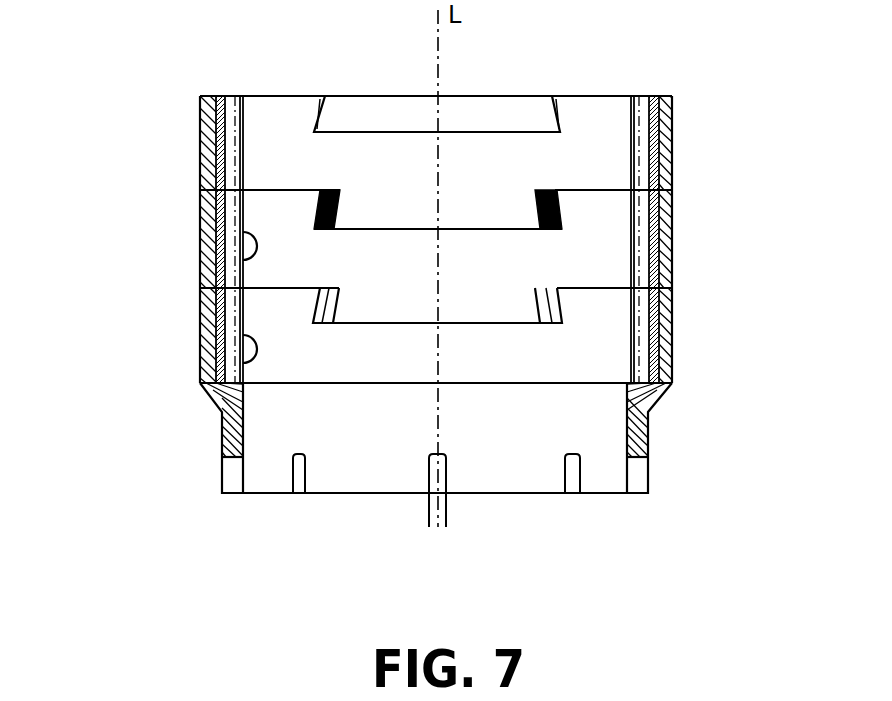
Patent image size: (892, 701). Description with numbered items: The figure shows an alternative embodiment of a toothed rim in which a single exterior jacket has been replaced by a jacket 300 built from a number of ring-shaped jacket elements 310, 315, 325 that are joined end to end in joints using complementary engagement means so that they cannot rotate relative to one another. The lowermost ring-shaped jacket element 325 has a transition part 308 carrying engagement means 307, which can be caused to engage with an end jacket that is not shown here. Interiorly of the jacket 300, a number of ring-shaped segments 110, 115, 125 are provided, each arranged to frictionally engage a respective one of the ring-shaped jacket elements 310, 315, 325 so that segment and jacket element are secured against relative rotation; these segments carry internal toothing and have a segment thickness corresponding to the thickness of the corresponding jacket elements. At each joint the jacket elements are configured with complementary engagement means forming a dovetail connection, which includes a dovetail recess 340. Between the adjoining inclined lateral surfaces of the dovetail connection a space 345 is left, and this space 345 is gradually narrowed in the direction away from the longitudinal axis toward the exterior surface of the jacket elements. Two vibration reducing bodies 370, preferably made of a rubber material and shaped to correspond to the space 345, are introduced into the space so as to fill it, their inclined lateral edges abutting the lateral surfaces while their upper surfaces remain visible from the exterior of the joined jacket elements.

The jacket 300 is at (172, 167).
The ring-shaped segment 110 is at (242, 138).
The ring-shaped segment 115 is at (243, 262).
The ring-shaped segment 125 is at (243, 365).
The ring-shaped jacket element 310 is at (672, 132).
The ring-shaped jacket element 315 is at (662, 242).
The ring-shaped jacket element 325 is at (668, 352).
The dovetail recess 340 is at (483, 132).
The vibration reducing body 370 is at (334, 191).
The space 345 is at (320, 309).
The transition part 308 is at (658, 400).
The engagement means 307 is at (572, 480).